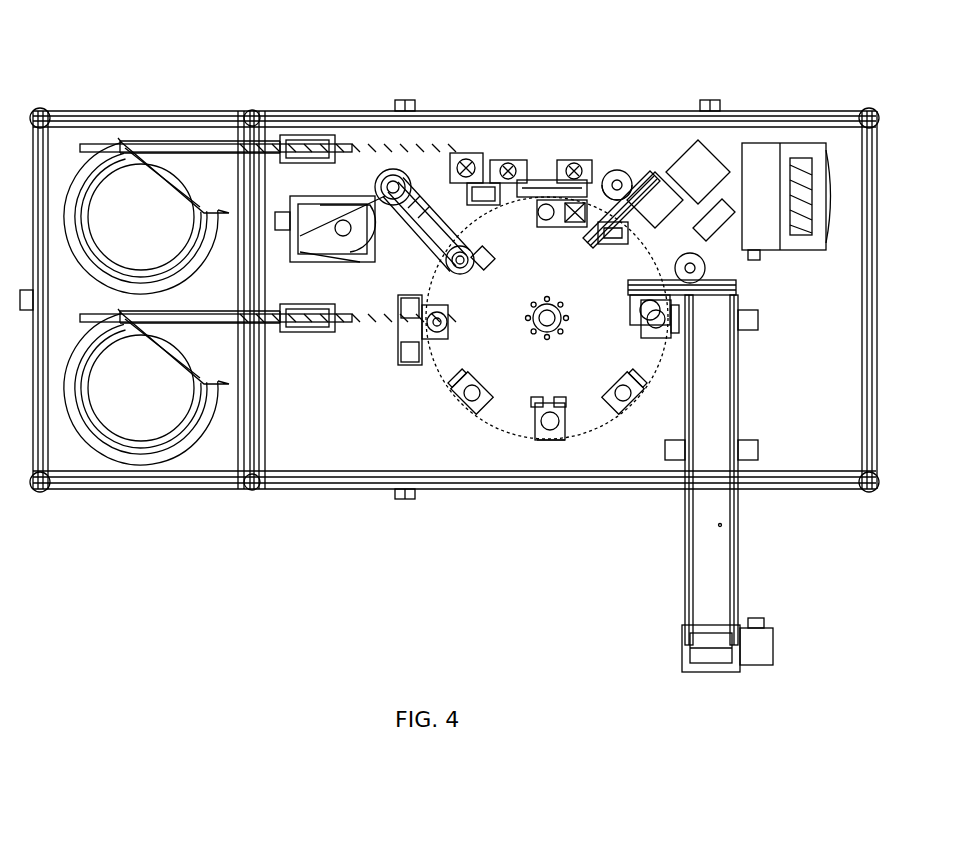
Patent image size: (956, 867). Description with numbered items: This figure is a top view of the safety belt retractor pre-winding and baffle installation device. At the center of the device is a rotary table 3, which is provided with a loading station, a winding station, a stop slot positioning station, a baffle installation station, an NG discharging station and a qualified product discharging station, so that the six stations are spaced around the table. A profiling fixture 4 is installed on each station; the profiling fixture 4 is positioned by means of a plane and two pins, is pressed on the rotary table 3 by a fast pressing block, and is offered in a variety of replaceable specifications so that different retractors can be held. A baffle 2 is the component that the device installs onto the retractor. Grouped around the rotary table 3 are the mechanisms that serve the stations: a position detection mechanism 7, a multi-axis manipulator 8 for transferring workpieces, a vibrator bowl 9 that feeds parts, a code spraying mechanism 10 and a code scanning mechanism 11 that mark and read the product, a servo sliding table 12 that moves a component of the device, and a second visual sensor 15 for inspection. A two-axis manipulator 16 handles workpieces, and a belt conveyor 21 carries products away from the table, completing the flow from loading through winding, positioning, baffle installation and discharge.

The baffle 2 is at (270, 131).
The rotary table 3 is at (582, 413).
The profiling fixture 4 is at (540, 442).
The position detection mechanism 7 is at (437, 266).
The multi-axis manipulator 8 is at (395, 178).
The vibrator bowl 9 is at (121, 157).
The code spraying mechanism 10 is at (555, 180).
The code scanning mechanism 11 is at (585, 175).
The servo sliding table 12 is at (518, 162).
The second visual sensor 15 is at (458, 152).
The two-axis manipulator 16 is at (648, 158).
The belt conveyor 21 is at (720, 525).